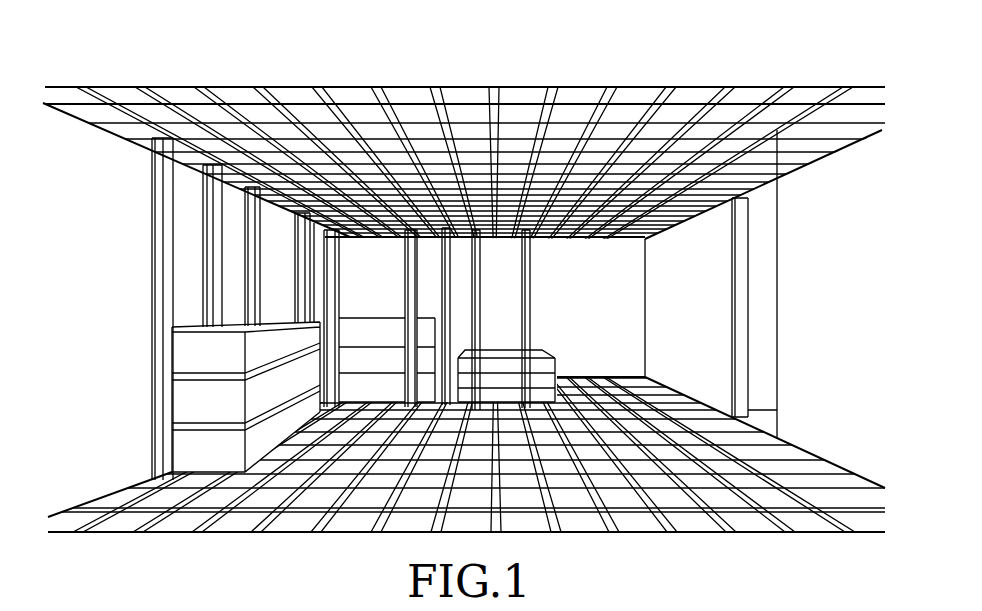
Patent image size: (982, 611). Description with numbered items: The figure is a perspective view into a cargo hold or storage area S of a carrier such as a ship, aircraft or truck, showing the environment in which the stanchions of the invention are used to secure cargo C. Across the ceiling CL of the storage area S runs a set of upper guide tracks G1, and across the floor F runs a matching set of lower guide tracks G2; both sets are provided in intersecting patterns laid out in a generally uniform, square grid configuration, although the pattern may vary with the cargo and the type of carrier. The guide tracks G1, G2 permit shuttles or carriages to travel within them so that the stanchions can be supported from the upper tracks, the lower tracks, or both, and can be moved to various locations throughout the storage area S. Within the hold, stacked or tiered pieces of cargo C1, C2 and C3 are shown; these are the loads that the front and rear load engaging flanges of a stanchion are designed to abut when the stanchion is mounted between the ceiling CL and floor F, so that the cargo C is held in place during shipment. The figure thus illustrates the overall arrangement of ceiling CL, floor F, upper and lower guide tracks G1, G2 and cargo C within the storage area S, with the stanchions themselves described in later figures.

The upper guide track G1 is at (220, 98).
The ceiling CL is at (525, 100).
The storage area S is at (700, 333).
The cargo C is at (172, 400).
The cargo C1 is at (188, 455).
The cargo C2 is at (187, 408).
The cargo C3 is at (192, 360).
The floor F is at (355, 522).
The lower guide track G2 is at (510, 513).